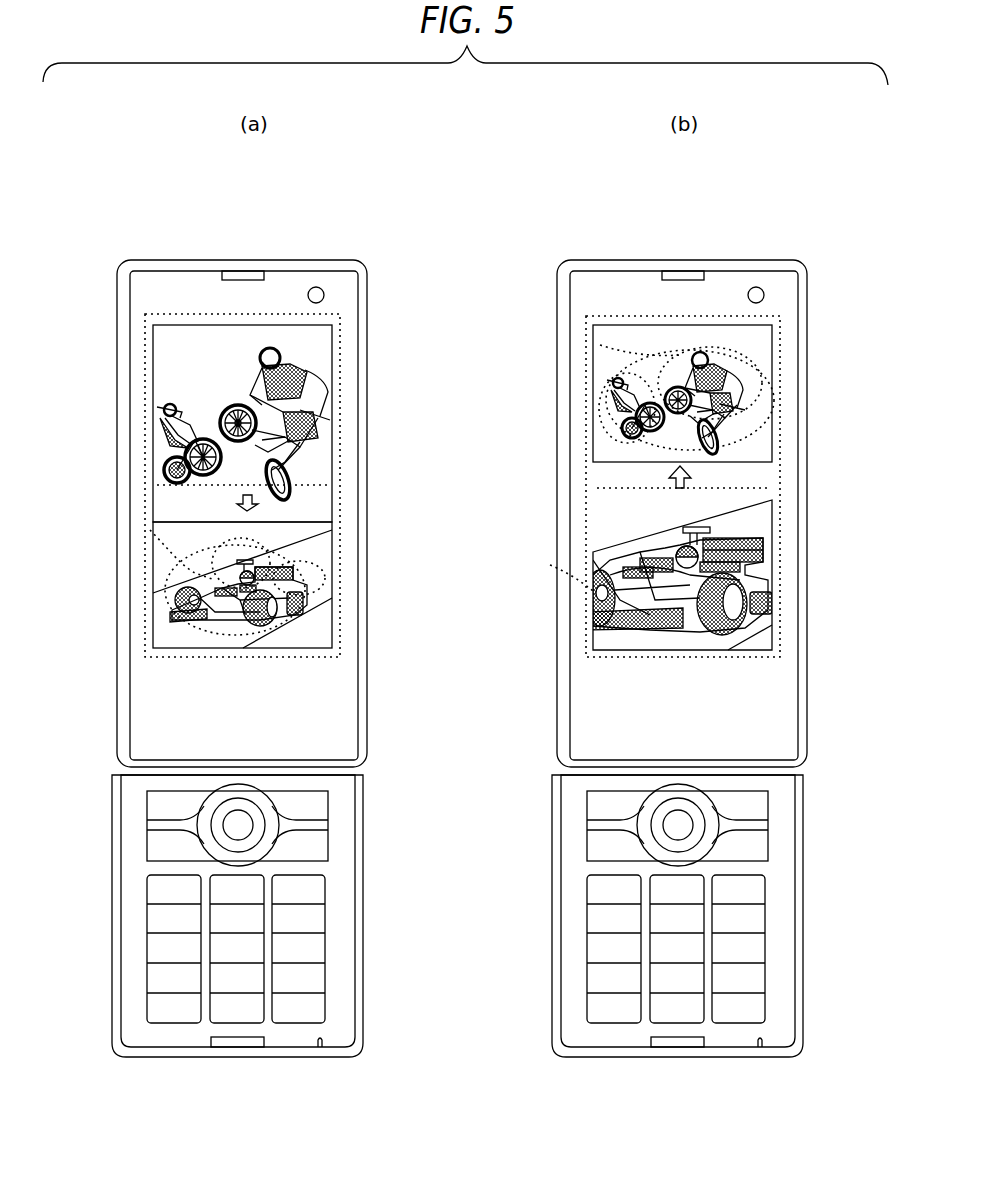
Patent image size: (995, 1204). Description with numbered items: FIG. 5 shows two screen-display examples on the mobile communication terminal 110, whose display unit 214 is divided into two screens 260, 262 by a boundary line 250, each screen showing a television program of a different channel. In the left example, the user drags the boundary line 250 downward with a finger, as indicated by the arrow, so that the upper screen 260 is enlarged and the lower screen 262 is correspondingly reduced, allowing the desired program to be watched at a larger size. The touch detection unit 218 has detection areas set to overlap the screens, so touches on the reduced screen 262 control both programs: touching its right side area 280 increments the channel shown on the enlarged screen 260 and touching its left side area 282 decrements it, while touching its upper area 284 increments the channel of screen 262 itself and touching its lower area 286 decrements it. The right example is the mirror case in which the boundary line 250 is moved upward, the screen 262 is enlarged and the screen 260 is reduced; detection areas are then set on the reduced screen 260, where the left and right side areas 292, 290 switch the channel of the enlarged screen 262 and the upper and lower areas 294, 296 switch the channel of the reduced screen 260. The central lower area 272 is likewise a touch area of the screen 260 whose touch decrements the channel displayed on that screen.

The mobile communication terminal 110 is at (298, 207).
The display unit 214 is at (163, 648).
The touch detection unit 218 is at (345, 458).
The boundary line 250 is at (192, 521).
The screen 260 is at (320, 377).
The screen 262 is at (320, 528).
The central lower area 272 is at (641, 707).
The right side area 280 is at (345, 587).
The left side area 282 is at (165, 590).
The upper area 284 is at (150, 530).
The lower area 286 is at (165, 640).
The right side area 290 is at (770, 402).
The left side area 292 is at (600, 392).
The upper area 294 is at (600, 345).
The lower area 296 is at (600, 445).